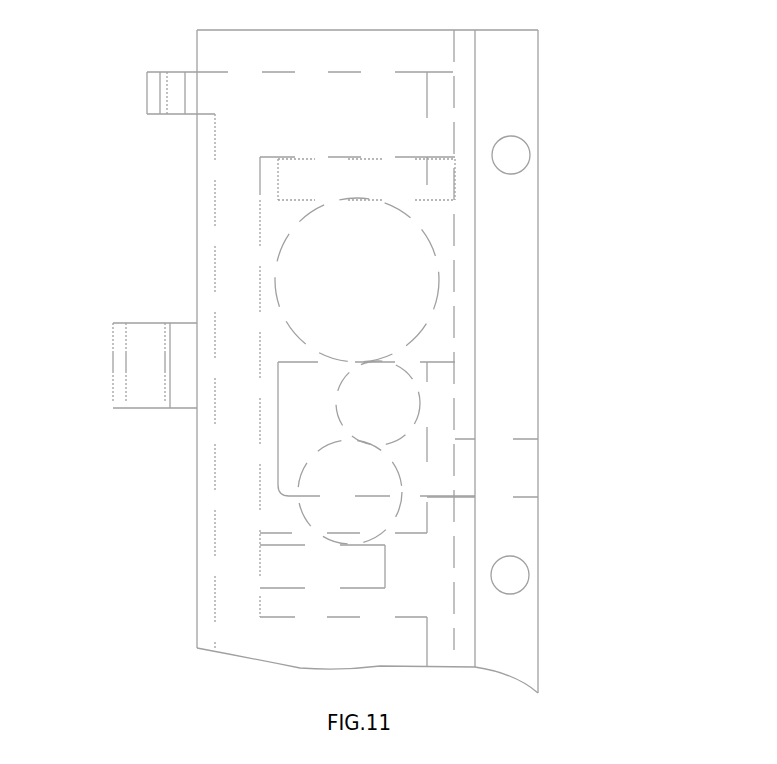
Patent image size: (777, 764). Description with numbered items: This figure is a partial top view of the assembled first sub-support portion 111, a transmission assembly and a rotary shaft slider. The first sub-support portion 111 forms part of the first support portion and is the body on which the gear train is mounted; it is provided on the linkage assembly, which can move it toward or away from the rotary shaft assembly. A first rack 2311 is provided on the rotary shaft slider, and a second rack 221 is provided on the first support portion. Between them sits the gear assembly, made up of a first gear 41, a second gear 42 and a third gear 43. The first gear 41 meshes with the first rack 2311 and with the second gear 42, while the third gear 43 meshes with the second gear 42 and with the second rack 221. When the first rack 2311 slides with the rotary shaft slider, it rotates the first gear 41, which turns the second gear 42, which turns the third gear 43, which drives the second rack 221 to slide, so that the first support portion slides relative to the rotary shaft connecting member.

The first sub-support portion 111 is at (500, 95).
The first rack 2311 is at (455, 185).
The first gear 41 is at (298, 224).
The second gear 42 is at (363, 435).
The third gear 43 is at (310, 462).
The second rack 221 is at (362, 588).